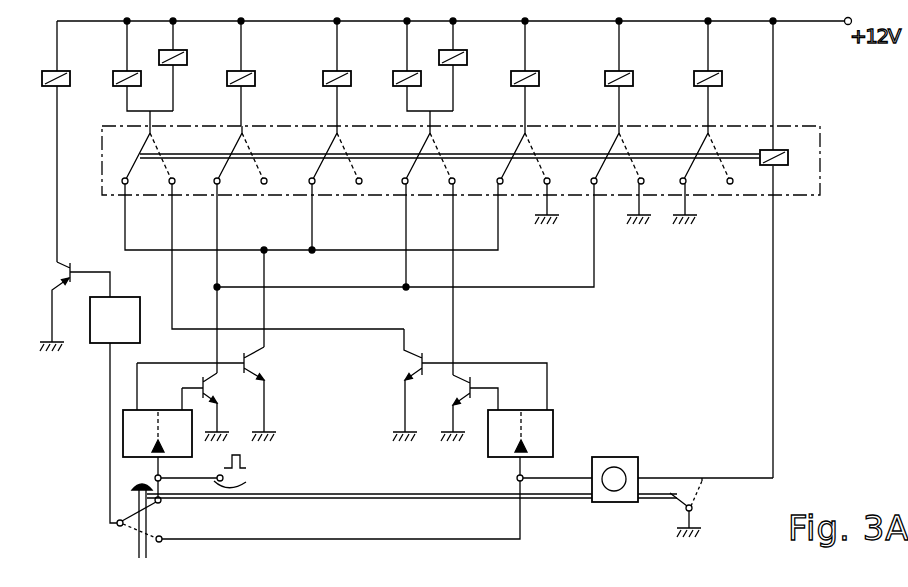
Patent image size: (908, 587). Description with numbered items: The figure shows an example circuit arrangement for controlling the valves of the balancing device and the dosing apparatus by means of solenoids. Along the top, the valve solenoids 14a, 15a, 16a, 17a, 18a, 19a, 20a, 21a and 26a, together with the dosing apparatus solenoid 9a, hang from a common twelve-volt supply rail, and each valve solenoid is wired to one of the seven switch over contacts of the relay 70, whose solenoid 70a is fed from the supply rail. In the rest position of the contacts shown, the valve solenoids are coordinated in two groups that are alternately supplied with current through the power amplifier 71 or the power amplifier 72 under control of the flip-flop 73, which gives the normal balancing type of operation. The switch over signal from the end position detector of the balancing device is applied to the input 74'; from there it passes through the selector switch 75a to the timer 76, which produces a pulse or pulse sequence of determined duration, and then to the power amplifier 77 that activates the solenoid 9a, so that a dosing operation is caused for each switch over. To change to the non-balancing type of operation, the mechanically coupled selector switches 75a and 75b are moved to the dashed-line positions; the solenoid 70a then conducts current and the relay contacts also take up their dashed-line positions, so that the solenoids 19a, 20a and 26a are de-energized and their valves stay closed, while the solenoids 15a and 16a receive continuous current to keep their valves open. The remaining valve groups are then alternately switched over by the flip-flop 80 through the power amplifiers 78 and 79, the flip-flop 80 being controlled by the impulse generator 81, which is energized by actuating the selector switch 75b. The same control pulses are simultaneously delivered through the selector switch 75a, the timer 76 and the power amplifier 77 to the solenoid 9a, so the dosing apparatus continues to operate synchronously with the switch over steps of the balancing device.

The solenoid of the dosing apparatus 9a is at (66, 141).
The solenoid of valve 14 14a is at (464, 66).
The solenoid of valve 15 15a is at (539, 73).
The solenoid of valve 16 16a is at (633, 73).
The solenoid of valve 17 17a is at (184, 66).
The solenoid of valve 18 18a is at (130, 73).
The solenoid of valve 19 19a is at (255, 73).
The solenoid of valve 20 20a is at (324, 73).
The solenoid of valve 21 21a is at (412, 73).
The solenoid of valve 26 26a is at (721, 73).
The relay 70 is at (803, 182).
The solenoid of the relay 70a is at (788, 151).
The power amplifier 71 is at (250, 387).
The power amplifier 72 is at (212, 407).
The flip-flop 73 is at (176, 417).
The input 74' is at (213, 473).
The selector switch 75a is at (318, 519).
The selector switch 75b is at (675, 507).
The timer 76 is at (121, 303).
The power amplifier 77 is at (68, 306).
The power amplifier 78 is at (460, 385).
The power amplifier 79 is at (461, 408).
The flip-flop 80 is at (553, 422).
The impulse generator 81 is at (638, 467).